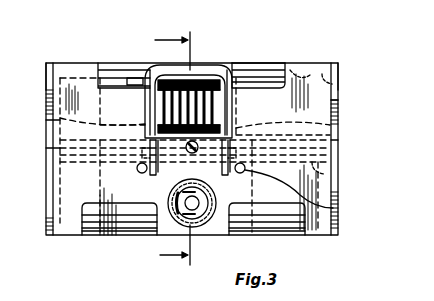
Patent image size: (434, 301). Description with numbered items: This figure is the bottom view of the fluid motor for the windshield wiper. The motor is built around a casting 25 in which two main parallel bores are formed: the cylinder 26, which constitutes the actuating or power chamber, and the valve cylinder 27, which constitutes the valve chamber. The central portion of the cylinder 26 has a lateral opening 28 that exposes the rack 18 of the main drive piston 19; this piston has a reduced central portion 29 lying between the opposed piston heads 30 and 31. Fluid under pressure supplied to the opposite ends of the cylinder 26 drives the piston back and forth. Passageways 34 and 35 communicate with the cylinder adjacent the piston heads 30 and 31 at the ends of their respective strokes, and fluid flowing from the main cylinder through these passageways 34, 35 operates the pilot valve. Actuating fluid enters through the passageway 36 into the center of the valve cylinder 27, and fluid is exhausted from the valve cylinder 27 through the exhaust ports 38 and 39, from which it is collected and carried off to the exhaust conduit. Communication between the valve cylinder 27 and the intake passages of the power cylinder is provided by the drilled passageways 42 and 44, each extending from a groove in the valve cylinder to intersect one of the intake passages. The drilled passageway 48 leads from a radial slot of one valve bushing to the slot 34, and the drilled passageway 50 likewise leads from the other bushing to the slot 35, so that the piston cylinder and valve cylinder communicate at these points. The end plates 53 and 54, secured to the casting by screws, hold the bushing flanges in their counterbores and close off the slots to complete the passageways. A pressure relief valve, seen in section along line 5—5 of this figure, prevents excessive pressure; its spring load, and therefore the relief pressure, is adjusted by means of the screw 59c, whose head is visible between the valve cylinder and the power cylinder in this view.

The section line 5— 5 is at (171, 145).
The rack 18 is at (236, 75).
The main drive piston 19 is at (180, 58).
The casting 25 is at (272, 60).
The cylinder 26 is at (340, 89).
The valve cylinder 27 is at (324, 172).
The lateral opening 28 is at (206, 72).
The reduced central portion 29 is at (136, 78).
The piston head 30 is at (120, 72).
The piston head 31 is at (278, 90).
The passageway 34 is at (52, 125).
The passageway 35 is at (342, 116).
The passageway 36 is at (185, 212).
The exhaust port 38 is at (142, 173).
The exhaust port 39 is at (333, 208).
The drilled passageway 42 is at (150, 177).
The drilled passageway 44 is at (241, 177).
The drilled passageway 48 is at (50, 148).
The drilled passageway 50 is at (342, 141).
The end plate 53 is at (48, 68).
The end plate 54 is at (335, 68).
The screw 59c is at (190, 153).